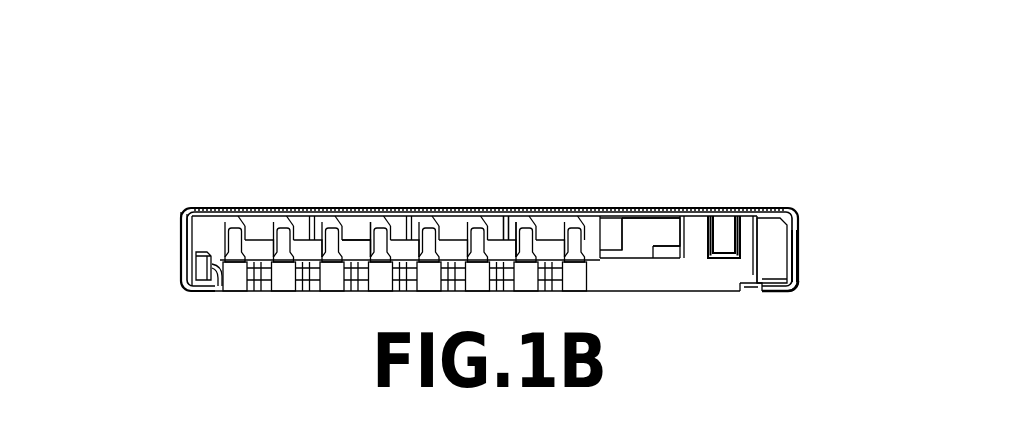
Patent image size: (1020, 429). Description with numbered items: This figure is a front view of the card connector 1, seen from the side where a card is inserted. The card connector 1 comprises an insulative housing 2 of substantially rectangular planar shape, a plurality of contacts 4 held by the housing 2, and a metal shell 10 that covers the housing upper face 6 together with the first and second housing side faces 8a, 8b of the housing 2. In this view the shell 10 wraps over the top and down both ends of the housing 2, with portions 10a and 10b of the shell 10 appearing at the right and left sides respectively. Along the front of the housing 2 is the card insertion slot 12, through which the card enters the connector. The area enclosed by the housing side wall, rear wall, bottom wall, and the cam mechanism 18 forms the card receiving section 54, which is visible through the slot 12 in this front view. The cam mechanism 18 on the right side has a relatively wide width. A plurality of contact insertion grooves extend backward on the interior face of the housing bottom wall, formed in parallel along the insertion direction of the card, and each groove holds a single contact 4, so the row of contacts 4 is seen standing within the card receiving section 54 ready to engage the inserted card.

The card connector 1 is at (683, 162).
The housing 2 is at (697, 269).
The contacts 4 is at (441, 236).
The housing upper face 6 is at (766, 218).
The first housing side face 8a is at (796, 234).
The second housing side face 8b is at (182, 236).
The metal shell 10 is at (177, 263).
The shell right portion 10a is at (800, 250).
The shell left portion 10b is at (180, 222).
The card insertion slot 12 is at (507, 232).
The cam mechanism 18 is at (674, 233).
The card receiving section 54 is at (350, 233).